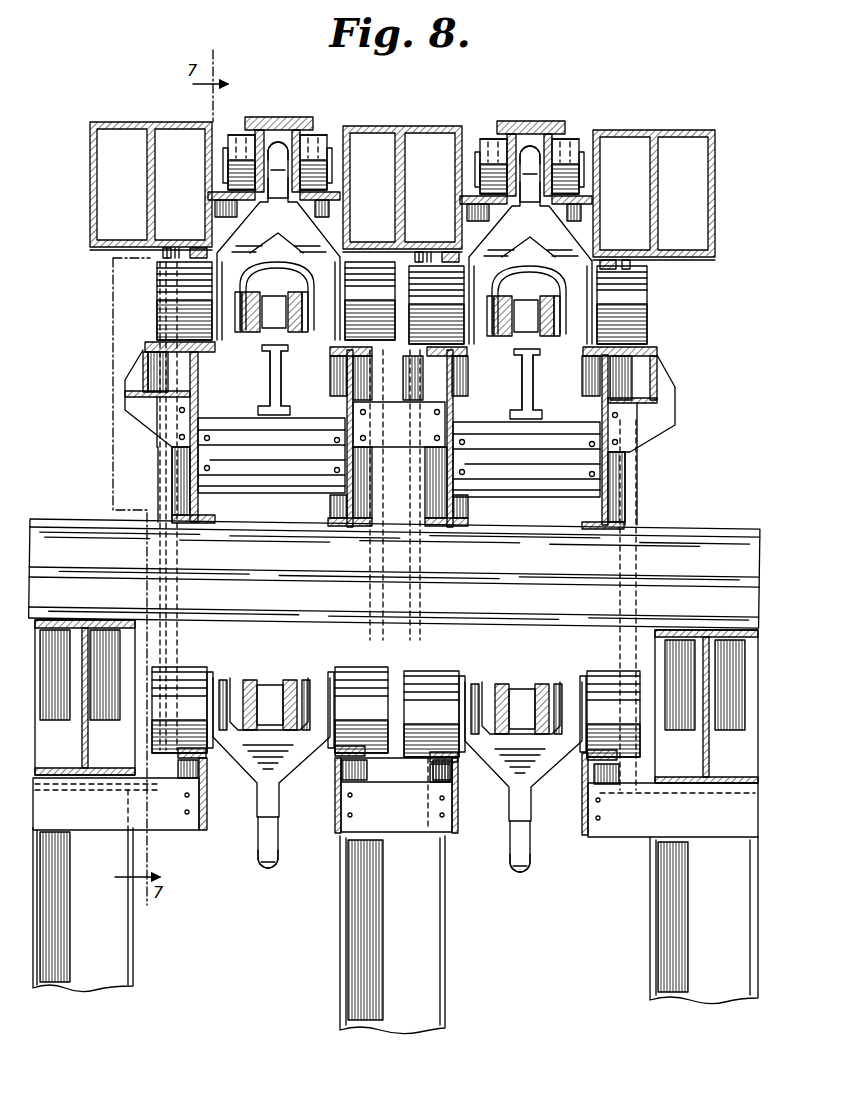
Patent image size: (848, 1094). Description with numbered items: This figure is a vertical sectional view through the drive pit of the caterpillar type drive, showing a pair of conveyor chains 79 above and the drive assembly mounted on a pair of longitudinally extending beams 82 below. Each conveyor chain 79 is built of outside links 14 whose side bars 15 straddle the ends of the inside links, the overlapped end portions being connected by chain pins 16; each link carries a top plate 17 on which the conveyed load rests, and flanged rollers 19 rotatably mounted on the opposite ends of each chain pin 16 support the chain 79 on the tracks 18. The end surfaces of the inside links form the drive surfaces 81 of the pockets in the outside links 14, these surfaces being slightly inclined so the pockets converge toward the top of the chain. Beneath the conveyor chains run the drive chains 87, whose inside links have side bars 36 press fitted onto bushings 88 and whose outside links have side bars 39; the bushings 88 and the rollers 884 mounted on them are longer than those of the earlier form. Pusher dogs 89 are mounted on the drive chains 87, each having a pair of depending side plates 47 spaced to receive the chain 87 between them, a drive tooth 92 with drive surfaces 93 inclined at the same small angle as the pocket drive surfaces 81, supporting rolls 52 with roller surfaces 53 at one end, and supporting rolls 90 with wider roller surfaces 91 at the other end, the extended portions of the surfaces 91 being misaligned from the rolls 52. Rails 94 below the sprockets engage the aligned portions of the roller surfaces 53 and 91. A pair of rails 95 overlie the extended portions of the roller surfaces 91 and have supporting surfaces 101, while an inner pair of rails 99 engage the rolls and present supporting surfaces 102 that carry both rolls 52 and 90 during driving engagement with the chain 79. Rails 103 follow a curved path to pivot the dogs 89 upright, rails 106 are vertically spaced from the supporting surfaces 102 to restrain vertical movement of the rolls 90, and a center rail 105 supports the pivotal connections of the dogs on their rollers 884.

The outside link 14 is at (308, 118).
The side bar 15 is at (228, 150).
The chain pin 16 is at (332, 165).
The top plate 17 is at (259, 130).
The track 18 is at (228, 195).
The flanged roller 19 is at (237, 135).
The side bar 36 is at (262, 340).
The side bar 39 is at (290, 263).
The side plate 47 is at (225, 680).
The supporting roll 52 is at (195, 667).
The roller surface 53 is at (170, 706).
The conveyor chain 79 is at (297, 116).
The drive surface 81 is at (279, 145).
The longitudinally extending beam 82 is at (82, 688).
The drive chain 87 is at (240, 297).
The bushing 88 is at (296, 332).
The center block 884 is at (278, 296).
The pusher dog 89 is at (238, 238).
The supporting roll 90 is at (155, 281).
The roller surface 91 is at (170, 290).
The drive tooth 92 is at (290, 176).
The drive surface 93 is at (271, 158).
The rail 94 is at (198, 757).
The rail 95 is at (143, 346).
The rail 99 is at (165, 318).
The supporting surface 101 is at (160, 342).
The supporting surface 102 is at (215, 350).
The rail 103 is at (150, 258).
The center rail 105 is at (268, 350).
The rail 106 is at (188, 250).